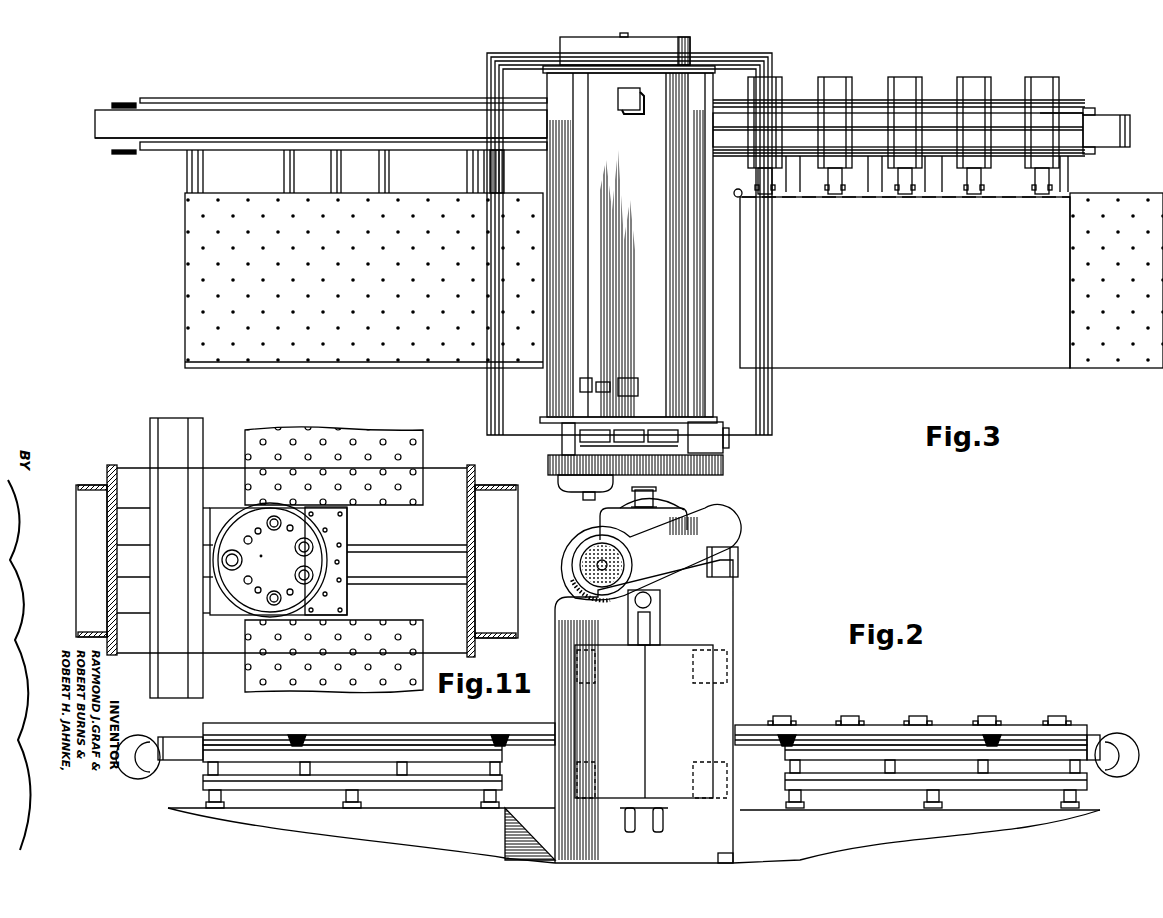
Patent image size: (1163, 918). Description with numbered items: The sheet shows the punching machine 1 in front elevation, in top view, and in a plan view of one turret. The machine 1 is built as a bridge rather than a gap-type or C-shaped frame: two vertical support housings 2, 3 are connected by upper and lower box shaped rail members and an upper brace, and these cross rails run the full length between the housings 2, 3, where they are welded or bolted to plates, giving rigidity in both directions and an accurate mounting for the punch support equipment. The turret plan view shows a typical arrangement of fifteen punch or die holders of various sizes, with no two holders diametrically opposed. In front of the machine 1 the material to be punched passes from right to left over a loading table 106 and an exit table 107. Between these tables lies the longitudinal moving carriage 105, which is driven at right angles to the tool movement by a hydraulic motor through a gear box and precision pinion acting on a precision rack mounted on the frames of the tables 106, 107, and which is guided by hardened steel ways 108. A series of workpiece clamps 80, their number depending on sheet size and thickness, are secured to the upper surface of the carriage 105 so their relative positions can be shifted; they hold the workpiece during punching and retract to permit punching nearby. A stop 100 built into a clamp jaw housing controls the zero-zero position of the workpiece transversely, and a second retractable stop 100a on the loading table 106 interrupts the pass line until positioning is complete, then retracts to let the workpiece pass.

In FIG. 2, the punching machine 1 is at (740, 606).
In FIG. 11, the vertical support housing 2 is at (76, 513).
In FIG. 11, the vertical support housing 3 is at (518, 530).
In FIG. 2, the workpiece clamps 80 is at (1055, 716).
In FIG. 3, the stop 100 is at (890, 192).
In FIG. 3, the retractable stop 100a is at (736, 189).
In FIG. 3, the longitudinal moving carriage 105 is at (1078, 112).
In FIG. 11, the loading table 106 is at (245, 682).
In FIG. 2, the loading table 106 is at (1075, 783).
In FIG. 11, the exit table 107 is at (423, 450).
In FIG. 2, the exit table 107 is at (212, 762).
In FIG. 3, the hardened steel ways 108 is at (1092, 112).